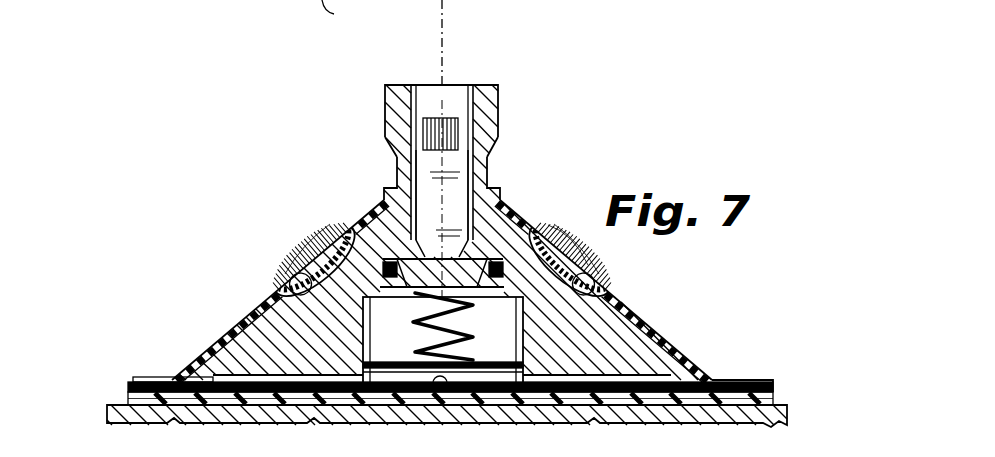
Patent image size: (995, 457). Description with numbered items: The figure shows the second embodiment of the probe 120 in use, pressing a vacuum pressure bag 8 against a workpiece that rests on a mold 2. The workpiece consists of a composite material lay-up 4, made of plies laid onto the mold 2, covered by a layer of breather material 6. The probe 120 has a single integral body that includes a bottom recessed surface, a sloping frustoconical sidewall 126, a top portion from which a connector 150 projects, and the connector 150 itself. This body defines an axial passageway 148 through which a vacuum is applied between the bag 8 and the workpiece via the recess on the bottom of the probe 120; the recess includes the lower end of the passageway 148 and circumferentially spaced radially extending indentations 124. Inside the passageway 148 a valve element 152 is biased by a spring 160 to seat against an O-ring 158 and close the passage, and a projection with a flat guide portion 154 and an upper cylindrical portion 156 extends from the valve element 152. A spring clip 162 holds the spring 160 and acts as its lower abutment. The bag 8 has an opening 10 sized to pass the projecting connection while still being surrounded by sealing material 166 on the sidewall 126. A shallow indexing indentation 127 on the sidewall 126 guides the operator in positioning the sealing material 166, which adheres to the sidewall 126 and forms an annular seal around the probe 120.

The mold 2 is at (107, 410).
The composite material lay-up 4 is at (120, 396).
The layer of breather material 6 is at (130, 377).
The vacuum pressure bag 8 is at (733, 374).
The opening 10 is at (381, 198).
The probe 120 is at (512, 185).
The radially extending indentations 124 is at (213, 373).
The frustoconical sidewall 126 is at (553, 237).
The indexing indentation 127 is at (282, 292).
The axial passageway 148 is at (454, 94).
The connector 150 is at (387, 87).
The valve element 152 is at (383, 209).
The flat guide portion 154 is at (464, 211).
The upper cylindrical portion 156 is at (453, 133).
The O-ring 158 is at (443, 335).
The spring 160 is at (465, 326).
The spring clip 162 is at (502, 360).
The sealing material 166 is at (590, 250).